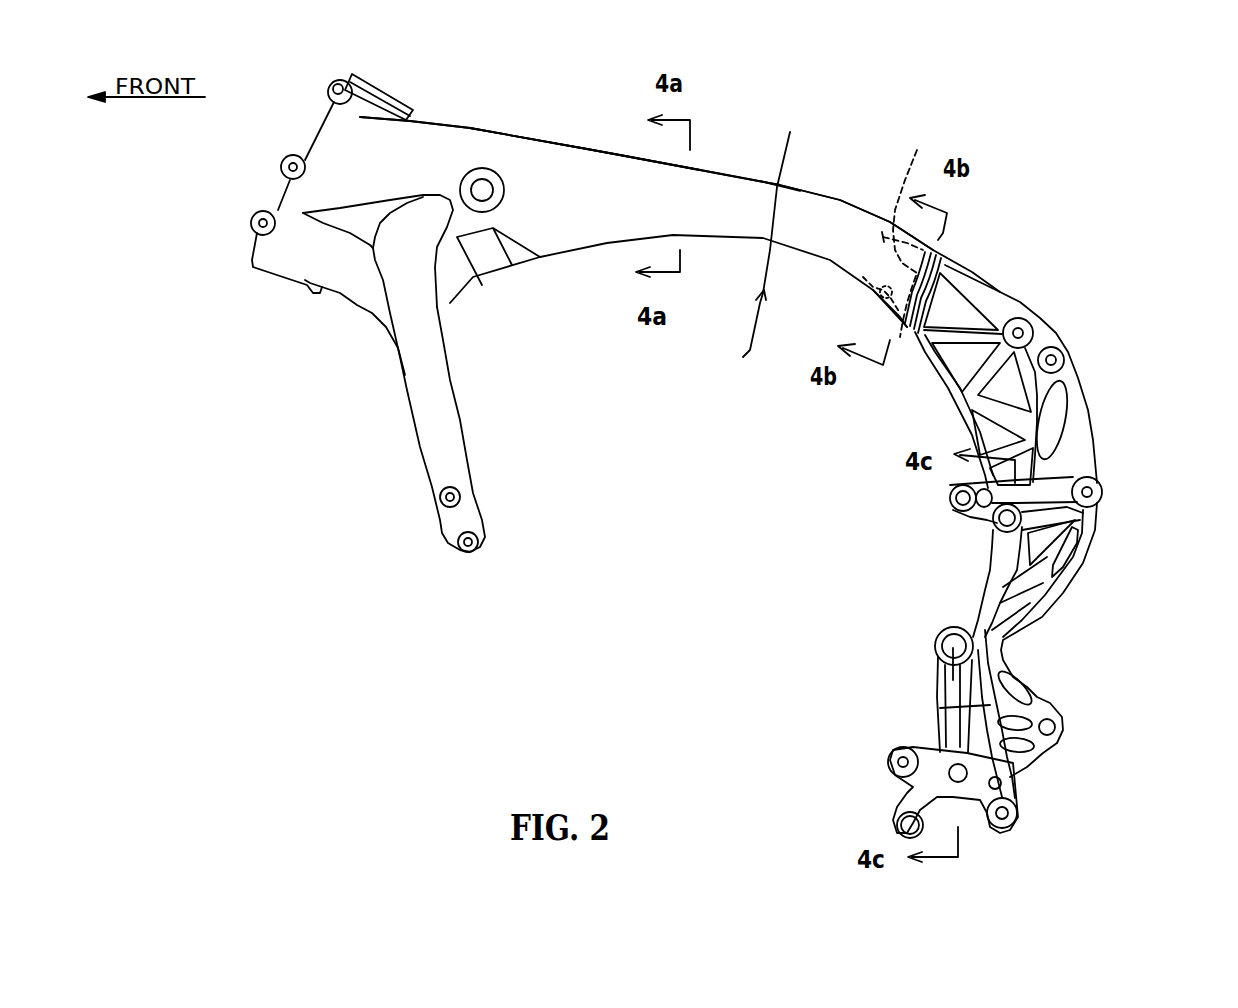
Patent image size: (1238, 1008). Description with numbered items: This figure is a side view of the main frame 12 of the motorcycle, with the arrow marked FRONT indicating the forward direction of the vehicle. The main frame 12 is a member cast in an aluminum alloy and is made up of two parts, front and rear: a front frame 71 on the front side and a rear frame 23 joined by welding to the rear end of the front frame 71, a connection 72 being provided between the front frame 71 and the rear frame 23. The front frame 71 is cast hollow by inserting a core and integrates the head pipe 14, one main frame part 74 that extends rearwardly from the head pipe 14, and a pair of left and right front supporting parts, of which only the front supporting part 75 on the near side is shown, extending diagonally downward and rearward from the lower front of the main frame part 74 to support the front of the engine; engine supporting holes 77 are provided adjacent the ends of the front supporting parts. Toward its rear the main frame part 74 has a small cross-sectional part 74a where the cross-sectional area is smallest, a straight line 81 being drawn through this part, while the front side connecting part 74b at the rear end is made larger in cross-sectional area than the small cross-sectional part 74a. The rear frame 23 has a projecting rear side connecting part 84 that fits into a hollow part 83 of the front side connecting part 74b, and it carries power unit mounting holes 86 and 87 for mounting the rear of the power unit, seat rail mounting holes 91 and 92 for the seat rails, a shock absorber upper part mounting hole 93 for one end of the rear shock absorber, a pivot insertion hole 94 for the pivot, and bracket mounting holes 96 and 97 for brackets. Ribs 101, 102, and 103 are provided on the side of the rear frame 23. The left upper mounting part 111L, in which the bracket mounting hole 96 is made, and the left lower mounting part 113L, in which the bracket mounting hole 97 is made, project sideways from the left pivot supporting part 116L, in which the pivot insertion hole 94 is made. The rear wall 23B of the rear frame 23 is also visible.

The main frame 12 is at (610, 688).
The head pipe 14 is at (337, 147).
The rear frame 23 is at (1087, 387).
The rear wall 23B is at (980, 277).
The front frame 71 is at (585, 143).
The connection 72 is at (938, 249).
The main frame part 74 is at (718, 185).
The small cross-sectional part 74a is at (783, 178).
The front side connecting part 74b is at (898, 330).
The front supporting part 75 is at (430, 399).
The engine supporting hole 77 is at (442, 502).
The straight line 81 is at (755, 256).
The hollow part 83 is at (870, 293).
The rear side connecting part 84 is at (908, 230).
The power unit mounting hole 86 is at (953, 500).
The power unit mounting hole 87 is at (967, 760).
The seat rail mounting hole 91 is at (1022, 328).
The seat rail mounting hole 92 is at (1102, 492).
The shock absorber upper part mounting hole 93 is at (1057, 357).
The pivot insertion hole 94 is at (937, 640).
The bracket mounting hole 96 is at (980, 530).
The bracket mounting hole 97 is at (947, 775).
The rib 101 is at (973, 363).
The rib 102 is at (1050, 548).
The rib 103 is at (943, 697).
The left upper mounting part 111L is at (1013, 527).
The left lower mounting part 113L is at (967, 753).
The left pivot supporting part 116L is at (947, 637).